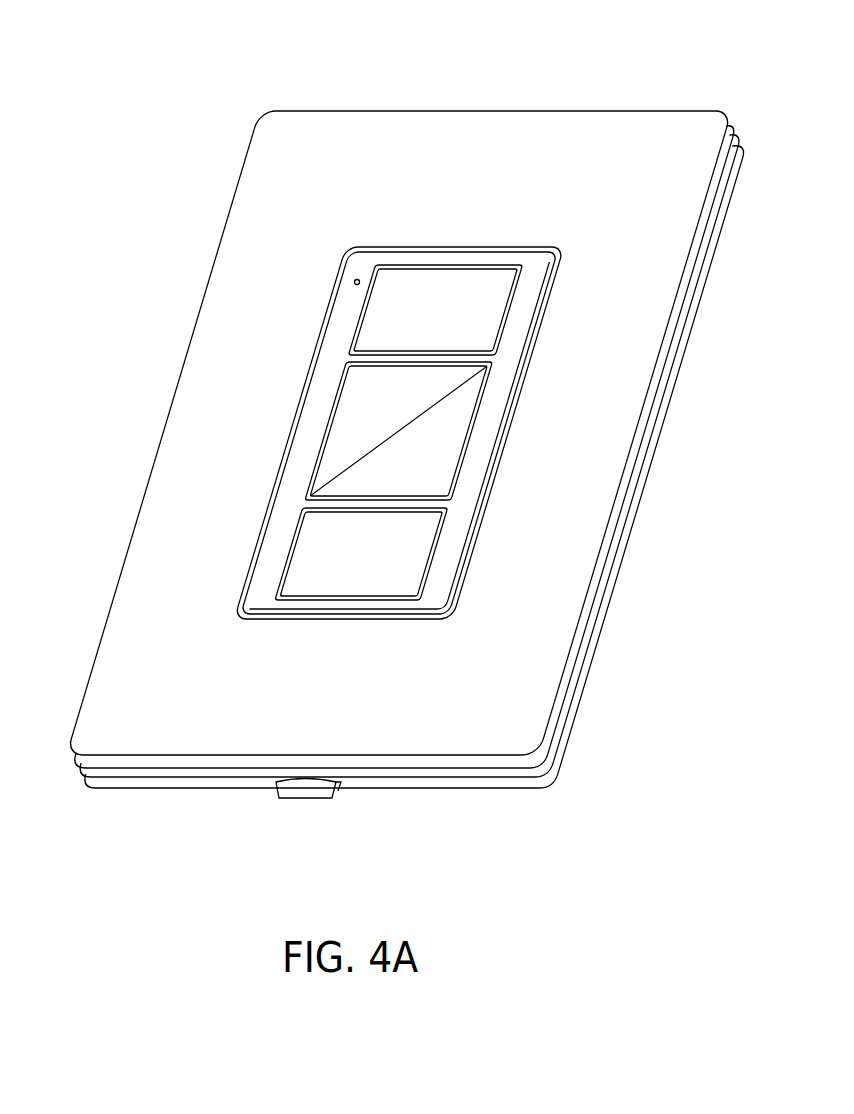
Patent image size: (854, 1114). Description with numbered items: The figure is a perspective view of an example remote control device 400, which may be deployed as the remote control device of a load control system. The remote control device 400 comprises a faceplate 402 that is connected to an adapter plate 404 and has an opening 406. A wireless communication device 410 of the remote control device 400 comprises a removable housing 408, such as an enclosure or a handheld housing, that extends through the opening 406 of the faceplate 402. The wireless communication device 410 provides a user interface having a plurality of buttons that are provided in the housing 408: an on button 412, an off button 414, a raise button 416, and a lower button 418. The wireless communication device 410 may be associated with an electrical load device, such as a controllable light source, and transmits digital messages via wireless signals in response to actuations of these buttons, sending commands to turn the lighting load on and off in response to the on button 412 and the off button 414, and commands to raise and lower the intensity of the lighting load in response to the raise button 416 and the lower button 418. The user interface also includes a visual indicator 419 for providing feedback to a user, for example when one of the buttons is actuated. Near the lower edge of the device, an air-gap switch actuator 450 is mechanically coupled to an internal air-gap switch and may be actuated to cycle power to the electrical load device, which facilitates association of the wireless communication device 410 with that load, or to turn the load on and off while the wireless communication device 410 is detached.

The remote control device 400 is at (218, 128).
The faceplate 402 is at (138, 660).
The adapter plate 404 is at (155, 789).
The opening 406 is at (513, 425).
The removable housing 408 is at (307, 432).
The wireless communication device 410 is at (237, 540).
The on button 412 is at (448, 298).
The off button 414 is at (392, 582).
The raise button 416 is at (370, 405).
The lower button 418 is at (425, 452).
The visual indicator 419 is at (360, 268).
The air-gap switch actuator 450 is at (300, 792).